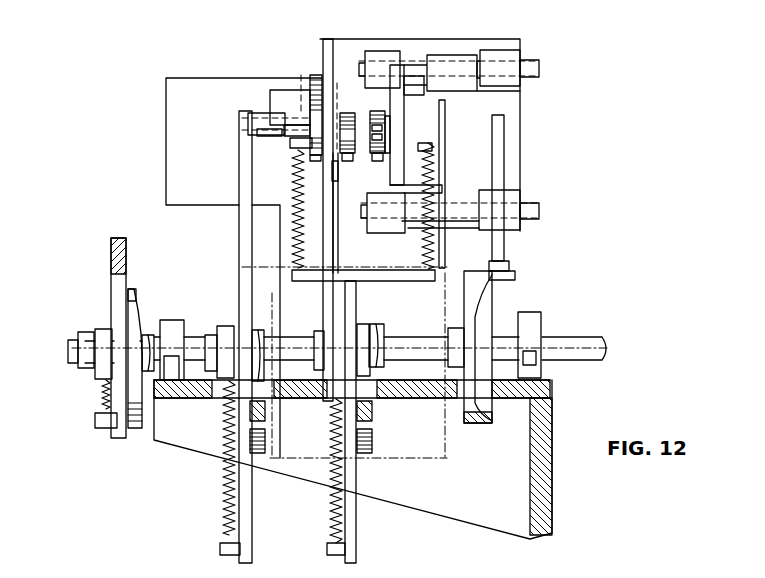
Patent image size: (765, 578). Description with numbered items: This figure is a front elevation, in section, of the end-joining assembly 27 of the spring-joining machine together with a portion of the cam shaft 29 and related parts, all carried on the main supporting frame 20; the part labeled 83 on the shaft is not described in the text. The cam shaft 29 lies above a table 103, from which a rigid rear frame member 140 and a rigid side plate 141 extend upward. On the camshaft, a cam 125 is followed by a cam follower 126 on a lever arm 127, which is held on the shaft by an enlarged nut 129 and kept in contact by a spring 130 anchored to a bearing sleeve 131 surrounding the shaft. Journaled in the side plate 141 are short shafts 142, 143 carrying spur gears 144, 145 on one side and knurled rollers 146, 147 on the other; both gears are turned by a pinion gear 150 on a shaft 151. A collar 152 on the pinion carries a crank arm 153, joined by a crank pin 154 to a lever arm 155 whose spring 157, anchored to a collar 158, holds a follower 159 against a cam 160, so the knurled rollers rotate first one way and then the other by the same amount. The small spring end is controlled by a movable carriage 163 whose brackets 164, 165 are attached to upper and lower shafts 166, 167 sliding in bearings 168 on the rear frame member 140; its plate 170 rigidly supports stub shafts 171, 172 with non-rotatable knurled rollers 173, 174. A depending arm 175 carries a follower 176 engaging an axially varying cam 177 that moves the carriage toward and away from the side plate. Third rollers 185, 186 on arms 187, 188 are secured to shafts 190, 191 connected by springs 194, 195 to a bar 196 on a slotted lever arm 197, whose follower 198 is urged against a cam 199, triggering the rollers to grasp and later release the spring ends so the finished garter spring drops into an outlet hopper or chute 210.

The main supporting frame 20 is at (552, 490).
The end-joining assembly 27 is at (556, 31).
The cam shaft 29 is at (588, 336).
The gear 83 is at (172, 317).
The table 103 is at (398, 377).
The cam 125 is at (133, 290).
The cam follower 126 is at (140, 306).
The lever arm 127 is at (110, 278).
The enlarged nut 129 is at (72, 337).
The spring 130 is at (100, 395).
The bearing sleeve 131 is at (100, 326).
The rear frame member 140 is at (414, 36).
The side plate 141 is at (323, 40).
The short shaft 142 is at (335, 100).
The short shaft 143 is at (332, 186).
The spur gear 144 is at (305, 122).
The spur gear 145 is at (311, 158).
The knurled roller 146 is at (350, 104).
The knurled roller 147 is at (344, 158).
The pinion gear 150 is at (315, 58).
The shaft 151 is at (299, 82).
The collar 152 is at (270, 96).
The crank arm 153 is at (262, 129).
The crank pin 154 is at (246, 120).
The lever arm 155 is at (237, 154).
The spring 157 is at (222, 470).
The collar 158 is at (222, 323).
The follower 159 is at (263, 440).
The cam 160 is at (263, 412).
The movable carriage 163 is at (474, 146).
The bracket 164 is at (455, 52).
The bracket 165 is at (453, 227).
The upper shaft 166 is at (538, 65).
The lower shaft 167 is at (538, 208).
The bearings 168 is at (392, 30).
The plate 170 is at (402, 103).
The stub shaft 171 is at (390, 118).
The stub shaft 172 is at (421, 148).
The knurled roller 173 is at (380, 102).
The knurled roller 174 is at (375, 158).
The depending arm 175 is at (503, 162).
The follower 176 is at (513, 270).
The cam 177 is at (480, 300).
The third roller 185 is at (370, 135).
The third roller 186 is at (370, 121).
The arm 187 is at (334, 180).
The arm 188 is at (416, 85).
The shaft 190 is at (288, 141).
The shaft 191 is at (440, 125).
The spring 194 is at (291, 190).
The spring 195 is at (433, 172).
The bar 196 is at (390, 280).
The slotted lever arm 197 is at (358, 312).
The follower 198 is at (371, 440).
The cam 199 is at (371, 412).
The outlet hopper or chute 210 is at (436, 318).